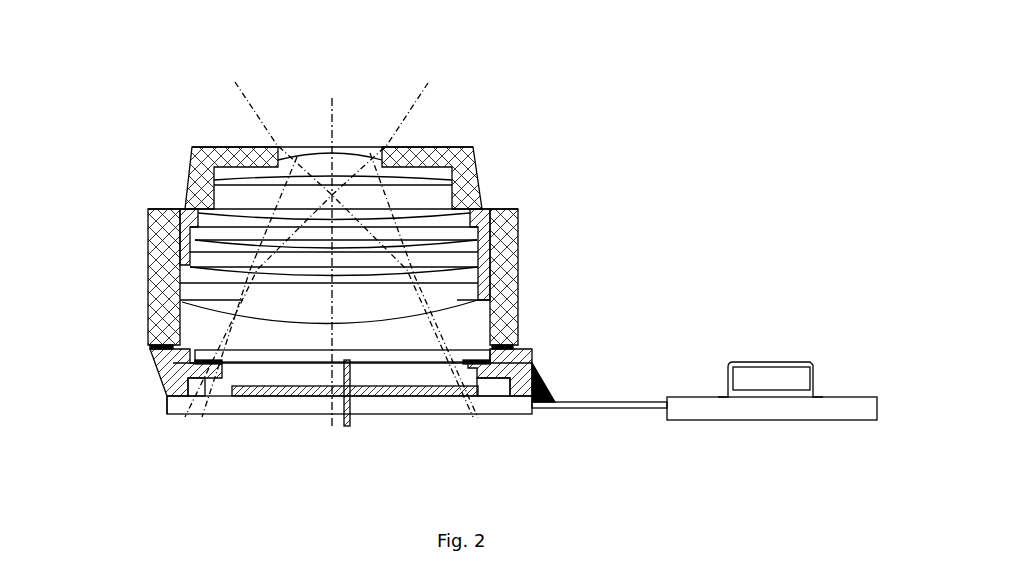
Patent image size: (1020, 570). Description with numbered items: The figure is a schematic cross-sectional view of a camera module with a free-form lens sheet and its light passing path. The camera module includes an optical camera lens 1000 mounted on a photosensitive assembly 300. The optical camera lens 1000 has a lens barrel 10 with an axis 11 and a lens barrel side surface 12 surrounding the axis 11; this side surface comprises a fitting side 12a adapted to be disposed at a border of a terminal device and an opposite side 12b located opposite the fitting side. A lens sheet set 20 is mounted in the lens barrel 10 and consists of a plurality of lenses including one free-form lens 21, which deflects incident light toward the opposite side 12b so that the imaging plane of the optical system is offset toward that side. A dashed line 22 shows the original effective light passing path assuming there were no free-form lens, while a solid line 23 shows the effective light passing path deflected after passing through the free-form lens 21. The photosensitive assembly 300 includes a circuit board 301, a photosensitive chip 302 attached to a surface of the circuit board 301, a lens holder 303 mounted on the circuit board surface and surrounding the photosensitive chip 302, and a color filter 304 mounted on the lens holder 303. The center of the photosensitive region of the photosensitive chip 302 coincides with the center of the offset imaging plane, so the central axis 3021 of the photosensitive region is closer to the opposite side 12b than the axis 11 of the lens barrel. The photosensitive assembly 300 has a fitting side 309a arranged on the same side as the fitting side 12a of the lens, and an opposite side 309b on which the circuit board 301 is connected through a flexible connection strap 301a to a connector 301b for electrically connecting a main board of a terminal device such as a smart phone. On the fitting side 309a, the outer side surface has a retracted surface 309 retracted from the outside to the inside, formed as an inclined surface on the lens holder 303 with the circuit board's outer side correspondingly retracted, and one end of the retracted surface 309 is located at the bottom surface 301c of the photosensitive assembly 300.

The optical camera lens 1000 is at (482, 157).
The lens barrel 10 is at (512, 245).
The axis 11 is at (332, 120).
The lens barrel side surface 12 is at (148, 230).
The fitting side 12a is at (148, 287).
The opposite side 12b is at (512, 295).
The lens sheet set 20 is at (352, 145).
The free-form lens 21 is at (500, 313).
The dashed line 22 is at (200, 416).
The solid line 23 is at (475, 422).
The photosensitive assembly 300 is at (513, 428).
The circuit board 301 is at (273, 405).
The flexible connection strap 301a is at (620, 405).
The connector 301b is at (755, 377).
The bottom surface 301c is at (183, 415).
The photosensitive chip 302 is at (318, 397).
The central axis 3021 is at (362, 398).
The lens holder 303 is at (158, 351).
The color filter 304 is at (375, 365).
The retracted surface 309 is at (162, 390).
The fitting side 309a is at (160, 382).
The opposite side 309b is at (534, 362).